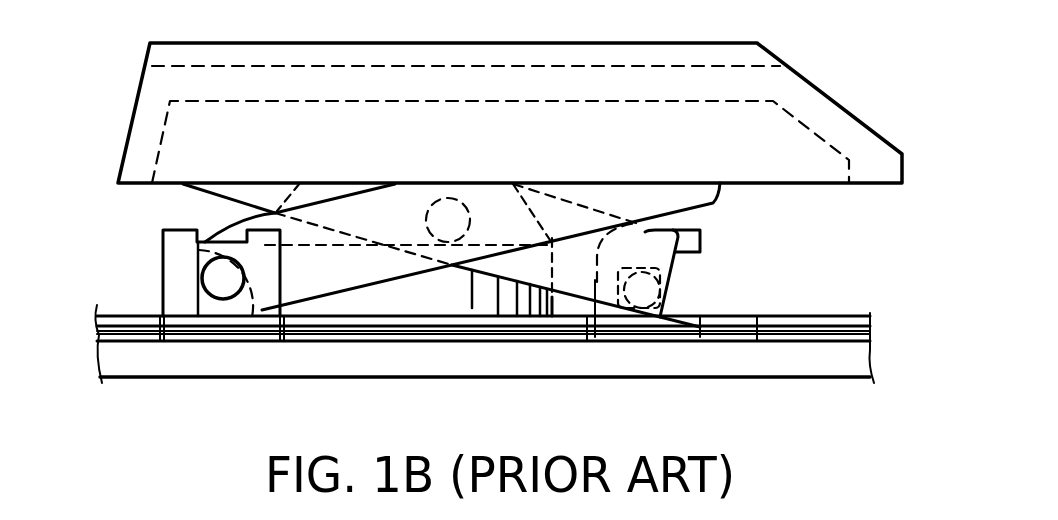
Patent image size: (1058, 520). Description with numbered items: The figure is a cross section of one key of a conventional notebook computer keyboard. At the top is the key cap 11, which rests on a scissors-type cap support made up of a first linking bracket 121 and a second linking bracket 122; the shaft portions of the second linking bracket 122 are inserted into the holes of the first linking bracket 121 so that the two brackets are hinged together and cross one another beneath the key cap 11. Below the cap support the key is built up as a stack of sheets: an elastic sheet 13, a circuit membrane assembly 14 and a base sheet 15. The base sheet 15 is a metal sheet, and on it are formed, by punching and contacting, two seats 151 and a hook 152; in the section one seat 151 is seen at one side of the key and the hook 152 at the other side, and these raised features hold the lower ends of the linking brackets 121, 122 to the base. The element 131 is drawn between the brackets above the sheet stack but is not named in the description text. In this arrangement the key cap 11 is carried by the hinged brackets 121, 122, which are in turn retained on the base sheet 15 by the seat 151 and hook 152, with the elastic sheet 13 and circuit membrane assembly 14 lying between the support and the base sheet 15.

The key cap 11 is at (592, 46).
The first linking bracket 121 is at (186, 191).
The second linking bracket 122 is at (716, 203).
The rubber dome / elastic member 131 is at (432, 305).
The seat 151 is at (170, 274).
The hook 152 is at (690, 250).
The elastic sheet 13 is at (875, 320).
The circuit membrane assembly 14 is at (875, 335).
The base sheet 15 is at (875, 362).